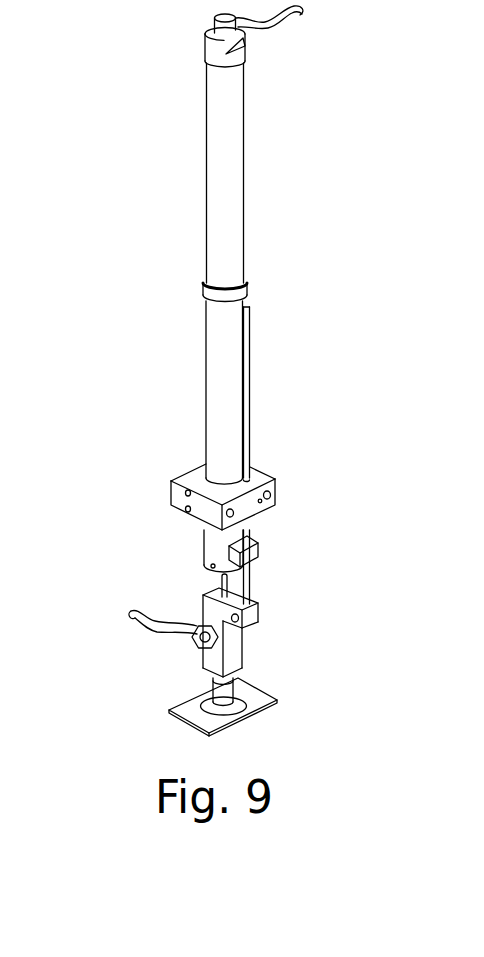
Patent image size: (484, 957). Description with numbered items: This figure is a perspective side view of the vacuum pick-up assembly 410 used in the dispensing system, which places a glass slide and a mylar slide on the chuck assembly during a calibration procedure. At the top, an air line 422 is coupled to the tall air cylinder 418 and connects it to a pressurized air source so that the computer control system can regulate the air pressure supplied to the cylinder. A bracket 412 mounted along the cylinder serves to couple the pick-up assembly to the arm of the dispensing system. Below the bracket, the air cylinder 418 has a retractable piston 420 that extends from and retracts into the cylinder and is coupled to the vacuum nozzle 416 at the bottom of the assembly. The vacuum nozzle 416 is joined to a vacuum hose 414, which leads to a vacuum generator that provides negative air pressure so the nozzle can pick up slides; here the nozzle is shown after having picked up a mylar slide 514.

The vacuum pick-up assembly 410 is at (275, 168).
The air line 422 is at (303, 14).
The air cylinder 418 is at (250, 411).
The bracket 412 is at (277, 492).
The retractable piston 420 is at (220, 582).
The vacuum nozzle 416 is at (238, 652).
The vacuum hose 414 is at (150, 628).
The mylar slide 514 is at (250, 706).